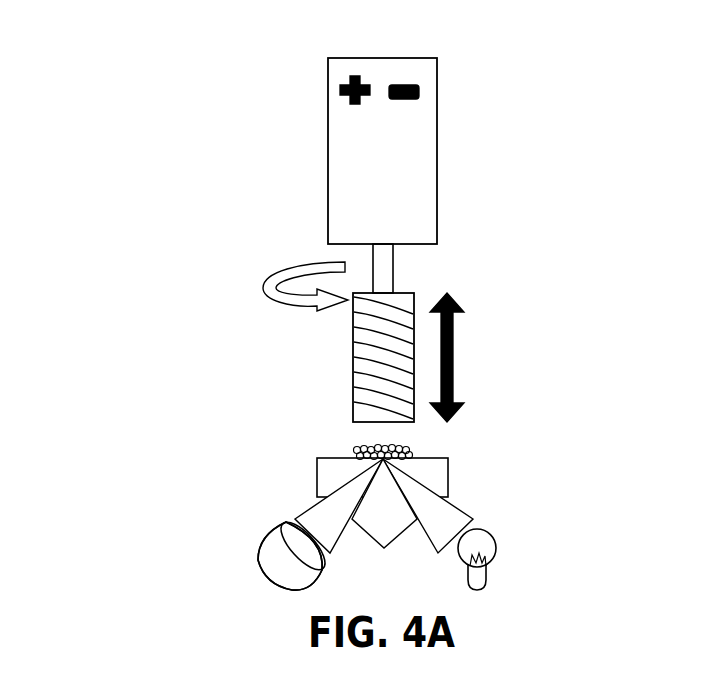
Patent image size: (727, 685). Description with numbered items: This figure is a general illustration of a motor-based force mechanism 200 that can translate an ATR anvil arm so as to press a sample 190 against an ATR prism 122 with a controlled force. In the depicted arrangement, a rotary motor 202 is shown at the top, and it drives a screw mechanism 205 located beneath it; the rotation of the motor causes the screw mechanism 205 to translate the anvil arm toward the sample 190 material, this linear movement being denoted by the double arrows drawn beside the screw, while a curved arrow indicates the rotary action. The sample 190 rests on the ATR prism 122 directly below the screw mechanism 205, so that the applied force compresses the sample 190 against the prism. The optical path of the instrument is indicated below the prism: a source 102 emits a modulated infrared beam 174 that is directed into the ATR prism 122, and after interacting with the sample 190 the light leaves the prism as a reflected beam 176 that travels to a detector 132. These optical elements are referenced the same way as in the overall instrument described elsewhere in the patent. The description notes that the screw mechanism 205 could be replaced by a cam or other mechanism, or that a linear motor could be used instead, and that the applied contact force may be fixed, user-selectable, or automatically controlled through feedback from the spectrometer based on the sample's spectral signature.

The motor-based force mechanism 200 is at (188, 61).
The rotary motor 202 is at (407, 211).
The screw mechanism 205 is at (338, 345).
The ATR prism 122 is at (330, 480).
The sample 190 is at (390, 445).
The reflected beam 176 is at (309, 518).
The modulated infrared beam 174 is at (445, 510).
The detector 132 is at (297, 558).
The source 102 is at (497, 550).